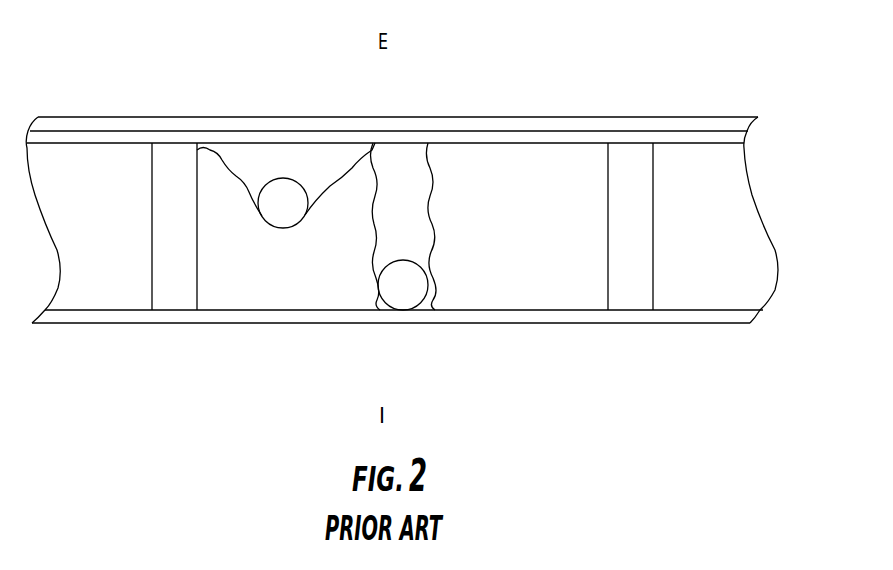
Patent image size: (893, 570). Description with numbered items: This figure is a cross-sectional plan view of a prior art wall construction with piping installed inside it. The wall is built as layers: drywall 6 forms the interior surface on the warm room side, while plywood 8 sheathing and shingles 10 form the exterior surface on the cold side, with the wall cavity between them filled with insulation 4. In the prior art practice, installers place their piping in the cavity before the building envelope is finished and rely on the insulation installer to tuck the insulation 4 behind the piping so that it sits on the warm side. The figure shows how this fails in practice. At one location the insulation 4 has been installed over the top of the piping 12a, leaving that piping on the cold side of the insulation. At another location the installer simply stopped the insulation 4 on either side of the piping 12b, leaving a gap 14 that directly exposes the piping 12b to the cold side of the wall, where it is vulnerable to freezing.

The insulation 4 is at (250, 288).
The drywall 6 is at (172, 316).
The plywood 8 is at (593, 138).
The shingles 10 is at (540, 117).
The piping 12a is at (288, 217).
The piping 12b is at (408, 302).
The gap 14 is at (410, 188).